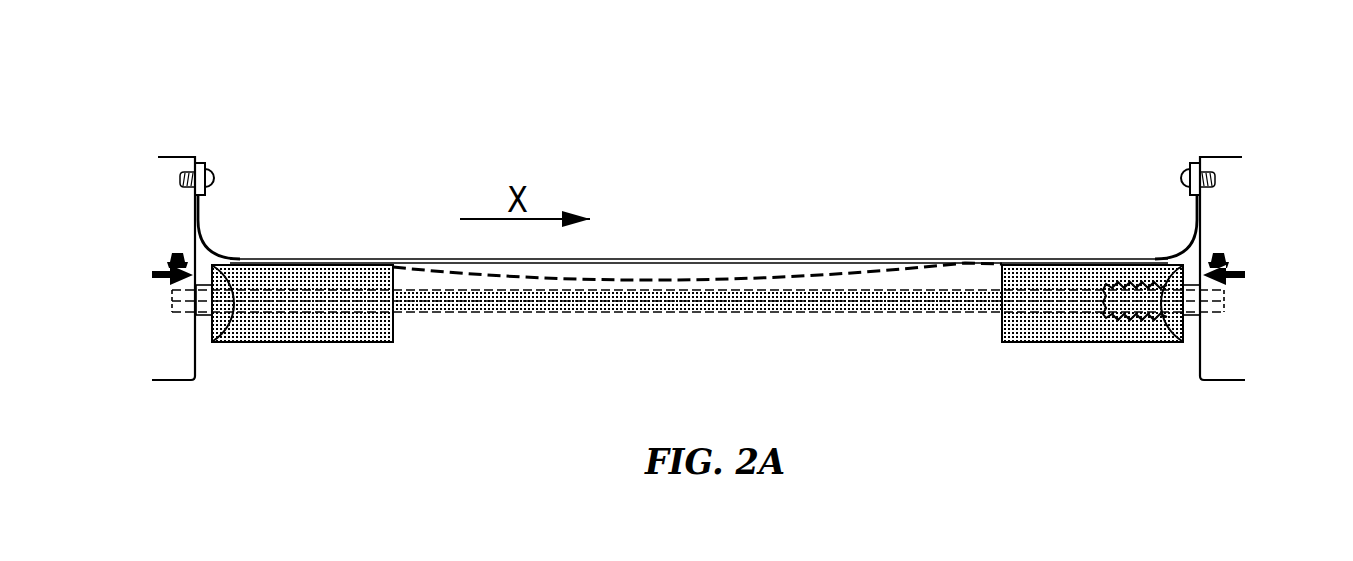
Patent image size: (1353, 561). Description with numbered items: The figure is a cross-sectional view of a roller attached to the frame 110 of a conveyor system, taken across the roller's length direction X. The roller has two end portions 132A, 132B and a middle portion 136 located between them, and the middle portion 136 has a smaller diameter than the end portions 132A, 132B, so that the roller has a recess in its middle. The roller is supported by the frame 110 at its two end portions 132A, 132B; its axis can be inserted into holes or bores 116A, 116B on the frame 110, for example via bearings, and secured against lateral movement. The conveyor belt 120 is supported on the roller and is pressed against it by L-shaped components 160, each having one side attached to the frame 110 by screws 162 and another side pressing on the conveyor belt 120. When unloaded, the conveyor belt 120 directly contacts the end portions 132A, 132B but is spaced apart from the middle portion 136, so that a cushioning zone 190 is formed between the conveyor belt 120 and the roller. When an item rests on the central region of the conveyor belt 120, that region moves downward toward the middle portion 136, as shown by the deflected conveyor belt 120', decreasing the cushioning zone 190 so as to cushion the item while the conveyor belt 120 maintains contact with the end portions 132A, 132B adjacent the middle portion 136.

The frame 110 is at (173, 156).
The screws 162 is at (206, 170).
The component 160 is at (212, 248).
The conveyor belt 120 is at (699, 205).
The deflected conveyor belt 120' is at (697, 229).
The cushioning zone 190 is at (937, 282).
The middle portion 136 is at (733, 307).
The end portion 132A is at (307, 287).
The end portion 132B is at (1070, 287).
The hole or bore 116A is at (190, 315).
The hole or bore 116B is at (1207, 313).